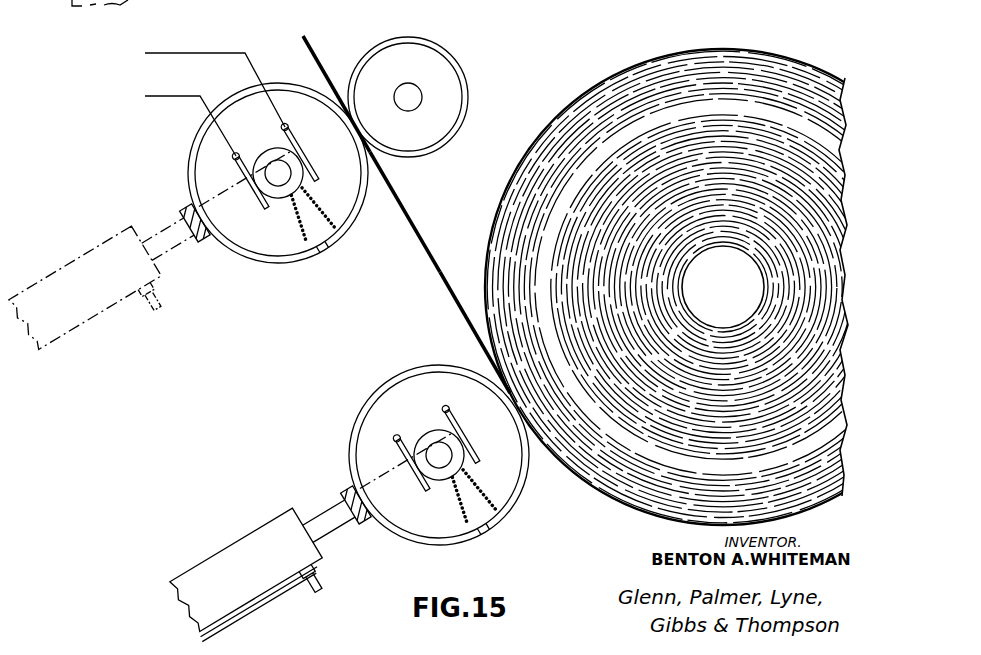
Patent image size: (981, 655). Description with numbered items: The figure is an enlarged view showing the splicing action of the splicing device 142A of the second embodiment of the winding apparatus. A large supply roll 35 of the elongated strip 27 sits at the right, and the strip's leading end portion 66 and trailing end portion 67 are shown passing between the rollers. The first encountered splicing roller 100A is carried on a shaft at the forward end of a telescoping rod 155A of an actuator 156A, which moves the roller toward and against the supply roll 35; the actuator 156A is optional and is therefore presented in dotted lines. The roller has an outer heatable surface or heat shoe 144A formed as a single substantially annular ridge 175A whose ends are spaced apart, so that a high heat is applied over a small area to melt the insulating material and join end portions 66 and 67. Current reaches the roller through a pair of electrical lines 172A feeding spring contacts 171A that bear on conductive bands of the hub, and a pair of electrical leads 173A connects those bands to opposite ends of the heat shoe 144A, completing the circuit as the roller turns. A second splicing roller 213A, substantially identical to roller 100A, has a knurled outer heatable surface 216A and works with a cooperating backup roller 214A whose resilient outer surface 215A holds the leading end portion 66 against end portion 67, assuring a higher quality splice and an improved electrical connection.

The supply roll 35 is at (763, 53).
The leading end portion 66 is at (318, 62).
The trailing end portion 67 is at (455, 298).
The elongated strip 27 is at (430, 257).
The backup roller 214A is at (443, 75).
The outer surface 215A is at (422, 157).
The outer heatable surface 216A is at (200, 130).
The second splicing roller 213A is at (213, 163).
The actuator 156A is at (86, 262).
The electrical lines 172A is at (448, 410).
The spring contacts 171A is at (431, 409).
The splicing roller 100A is at (372, 450).
The telescoping rod 155A is at (332, 508).
The annular ridge 175A is at (403, 537).
The heat shoe 144A is at (435, 547).
The electrical leads 173A is at (503, 512).
The splicing device 142A is at (250, 350).